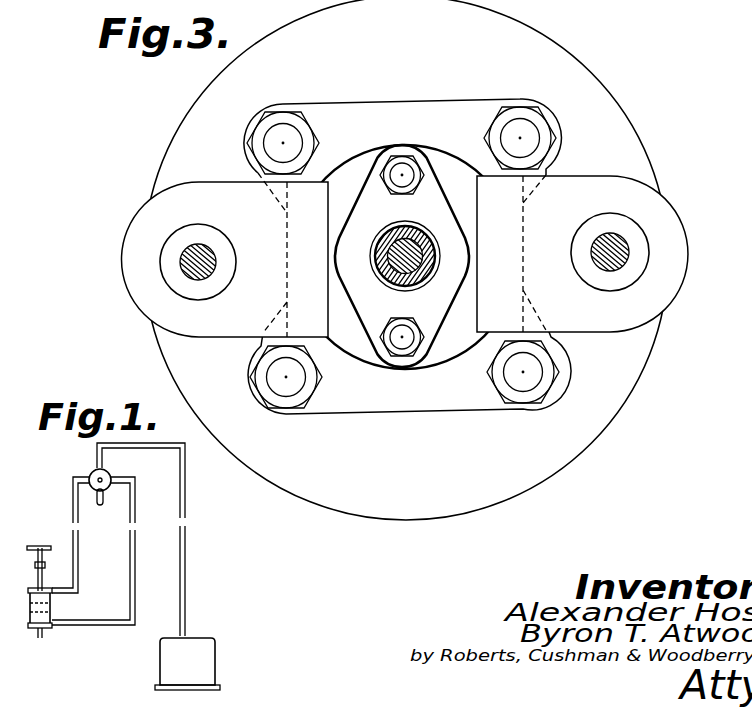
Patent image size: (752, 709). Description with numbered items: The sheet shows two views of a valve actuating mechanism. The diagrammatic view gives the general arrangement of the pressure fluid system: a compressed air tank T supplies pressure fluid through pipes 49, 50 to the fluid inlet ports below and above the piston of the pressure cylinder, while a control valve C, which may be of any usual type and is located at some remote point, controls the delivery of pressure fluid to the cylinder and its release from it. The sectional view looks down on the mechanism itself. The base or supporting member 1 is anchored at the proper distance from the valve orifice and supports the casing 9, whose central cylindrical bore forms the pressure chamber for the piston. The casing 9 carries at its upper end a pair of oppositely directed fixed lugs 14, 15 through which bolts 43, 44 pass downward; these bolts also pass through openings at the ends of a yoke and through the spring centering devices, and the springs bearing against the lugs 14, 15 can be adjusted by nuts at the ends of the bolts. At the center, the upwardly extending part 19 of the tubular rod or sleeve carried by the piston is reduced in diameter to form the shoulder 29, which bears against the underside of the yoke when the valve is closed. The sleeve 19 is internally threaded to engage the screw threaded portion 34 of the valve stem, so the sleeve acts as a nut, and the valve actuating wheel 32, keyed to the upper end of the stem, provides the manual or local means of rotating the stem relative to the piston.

In FIG. 3, the base or supporting member 1 is at (583, 87).
In FIG. 3, the casing 9 is at (449, 162).
In FIG. 1, the casing 9 is at (30, 628).
In FIG. 3, the shoulder 29 is at (386, 232).
In FIG. 3, the screw threaded portion of the valve stem 34 is at (407, 248).
In FIG. 3, the upwardly extending part of the tubular rod or sleeve 19 is at (412, 283).
In FIG. 3, the lug 15 is at (133, 256).
In FIG. 3, the bolt 44 is at (207, 262).
In FIG. 3, the lug 14 is at (680, 238).
In FIG. 3, the bolt 43 is at (613, 270).
In FIG. 1, the valve actuating wheel 32 is at (42, 548).
In FIG. 1, the control valve C is at (110, 476).
In FIG. 1, the pipe 50 is at (75, 597).
In FIG. 1, the pipe 49 is at (88, 622).
In FIG. 1, the compressed air tank T is at (203, 645).